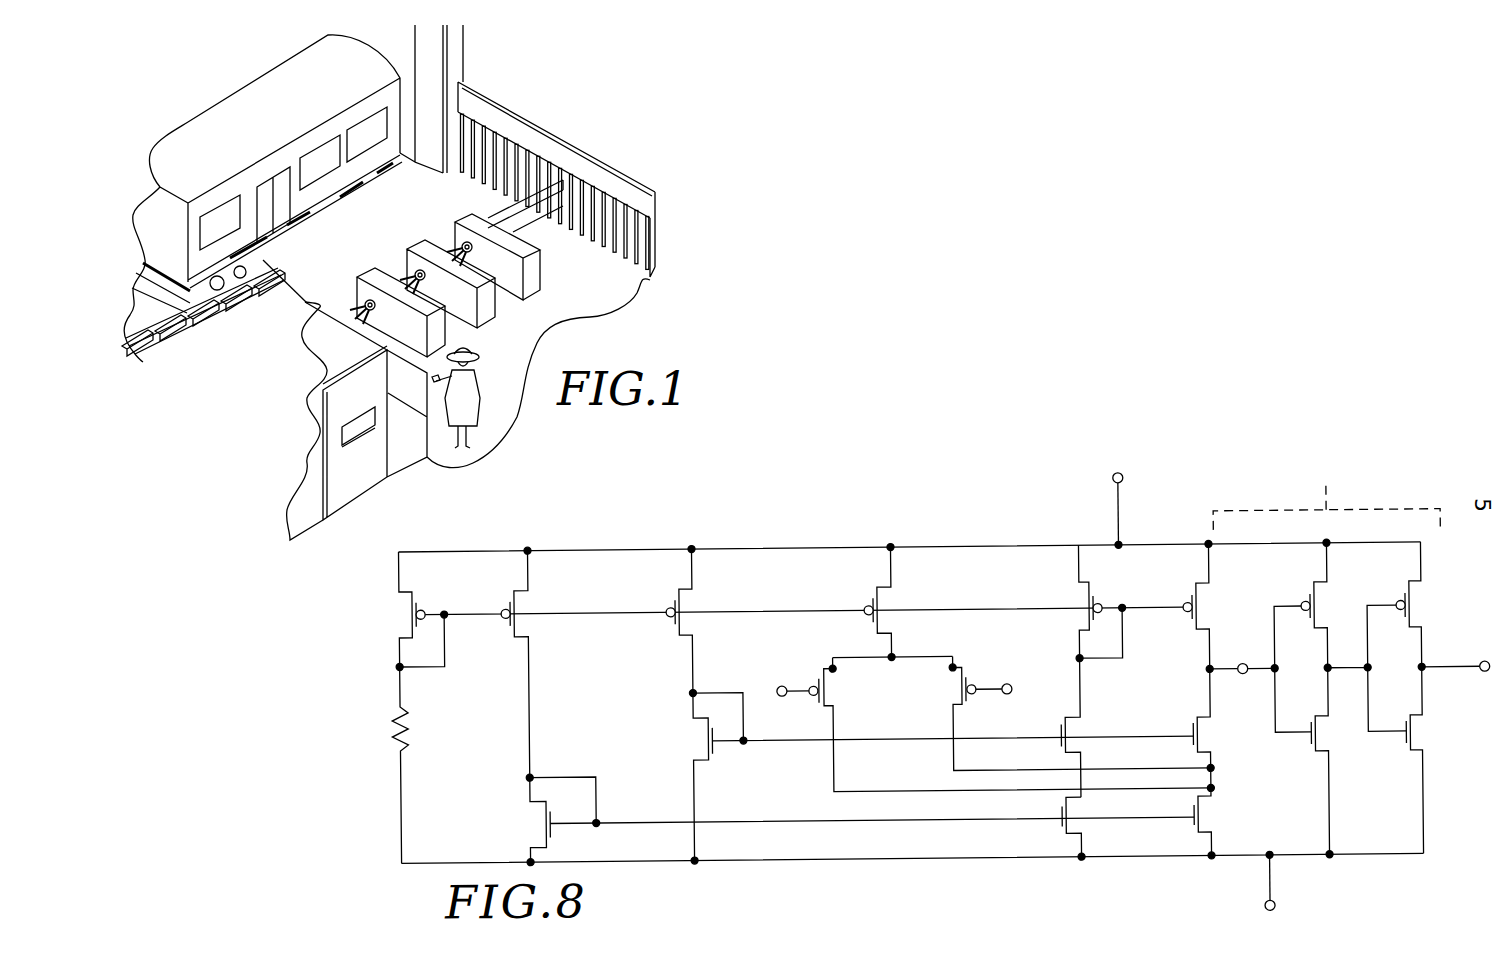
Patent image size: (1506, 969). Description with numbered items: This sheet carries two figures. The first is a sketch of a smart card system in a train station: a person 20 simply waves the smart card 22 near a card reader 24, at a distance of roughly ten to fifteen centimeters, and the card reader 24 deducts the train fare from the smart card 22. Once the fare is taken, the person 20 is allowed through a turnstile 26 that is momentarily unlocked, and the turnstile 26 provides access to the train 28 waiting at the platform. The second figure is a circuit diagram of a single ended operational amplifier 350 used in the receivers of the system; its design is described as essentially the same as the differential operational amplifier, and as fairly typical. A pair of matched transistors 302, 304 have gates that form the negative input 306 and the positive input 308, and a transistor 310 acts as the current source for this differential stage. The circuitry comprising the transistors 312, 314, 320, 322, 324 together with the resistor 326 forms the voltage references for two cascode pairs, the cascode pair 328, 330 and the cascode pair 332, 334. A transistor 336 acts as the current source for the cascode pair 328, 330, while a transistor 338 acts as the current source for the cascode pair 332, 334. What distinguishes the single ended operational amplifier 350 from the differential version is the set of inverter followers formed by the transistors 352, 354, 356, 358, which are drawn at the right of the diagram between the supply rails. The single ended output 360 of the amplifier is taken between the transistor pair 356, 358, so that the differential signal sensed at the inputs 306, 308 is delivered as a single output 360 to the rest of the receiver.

In FIG. 1, the person 20 is at (480, 378).
In FIG. 1, the smart card 22 is at (436, 378).
In FIG. 1, the card reader 24 is at (360, 369).
In FIG. 1, the turnstile 26 is at (356, 300).
In FIG. 1, the train 28 is at (248, 98).
In FIG. 8, the matched transistor 302 is at (837, 671).
In FIG. 8, the matched transistor 304 is at (953, 711).
In FIG. 8, the negative input 306 is at (789, 698).
In FIG. 8, the positive input 308 is at (1012, 687).
In FIG. 8, the current source transistor 310 is at (869, 606).
In FIG. 8, the transistor 312 is at (714, 747).
In FIG. 8, the transistor 314 is at (552, 826).
In FIG. 8, the transistor 320 is at (417, 590).
In FIG. 8, the transistor 322 is at (515, 626).
In FIG. 8, the transistor 324 is at (678, 626).
In FIG. 8, the resistor 326 is at (412, 726).
In FIG. 8, the cascode transistor 328 is at (1068, 830).
In FIG. 8, the cascode transistor 330 is at (1063, 750).
In FIG. 8, the cascode transistor 332 is at (1197, 828).
In FIG. 8, the cascode transistor 334 is at (1206, 750).
In FIG. 8, the current source transistor 336 is at (1098, 601).
In FIG. 8, the current source transistor 338 is at (1194, 592).
In FIG. 8, the single ended operational amplifier 350 is at (1210, 431).
In FIG. 8, the inverter follower transistor 352 is at (1313, 594).
In FIG. 8, the inverter follower transistor 354 is at (1318, 742).
In FIG. 8, the inverter follower transistor 356 is at (1412, 742).
In FIG. 8, the inverter follower transistor 358 is at (1408, 591).
In FIG. 8, the output 360 is at (1481, 677).